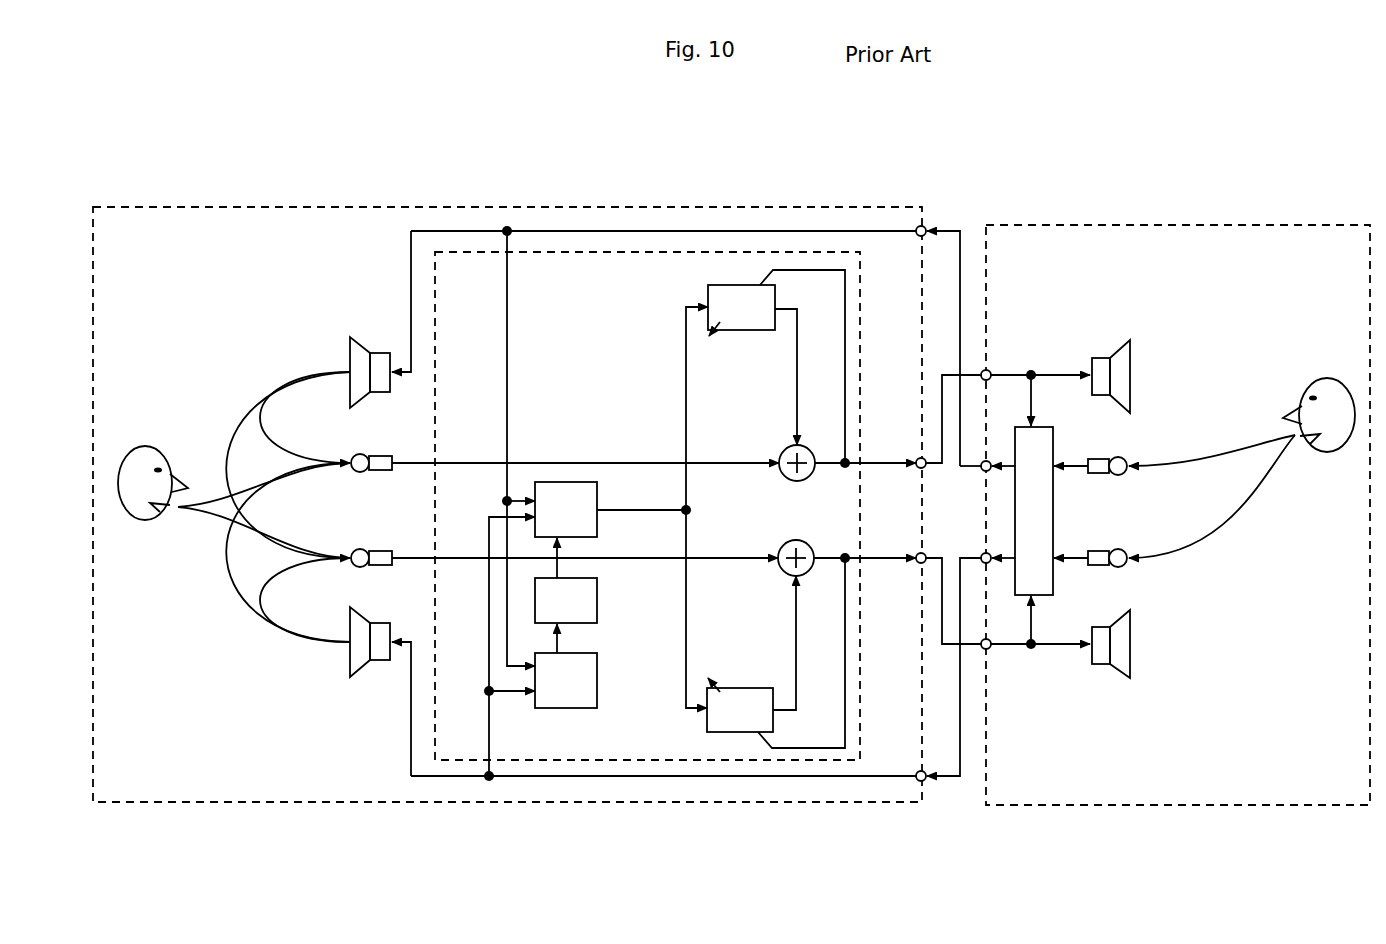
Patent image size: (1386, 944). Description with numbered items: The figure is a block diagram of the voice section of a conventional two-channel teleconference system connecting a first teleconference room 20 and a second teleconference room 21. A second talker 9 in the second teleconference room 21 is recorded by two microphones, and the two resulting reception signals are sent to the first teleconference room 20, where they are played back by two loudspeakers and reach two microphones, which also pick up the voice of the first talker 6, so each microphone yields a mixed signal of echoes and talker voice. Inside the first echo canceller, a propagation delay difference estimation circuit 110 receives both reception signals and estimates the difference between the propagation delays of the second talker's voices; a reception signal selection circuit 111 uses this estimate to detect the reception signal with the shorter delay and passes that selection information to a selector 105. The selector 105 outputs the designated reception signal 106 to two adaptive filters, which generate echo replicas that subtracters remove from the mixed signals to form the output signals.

The first teleconference room 20 is at (647, 430).
The second teleconference room 21 is at (1178, 468).
The first talker 6 is at (232, 457).
The second talker 9 is at (1319, 370).
The selector 105 is at (558, 449).
The selected reception signal 106 is at (652, 507).
The propagation delay difference estimation circuit 110 is at (550, 735).
The reception signal selection circuit 111 is at (602, 580).